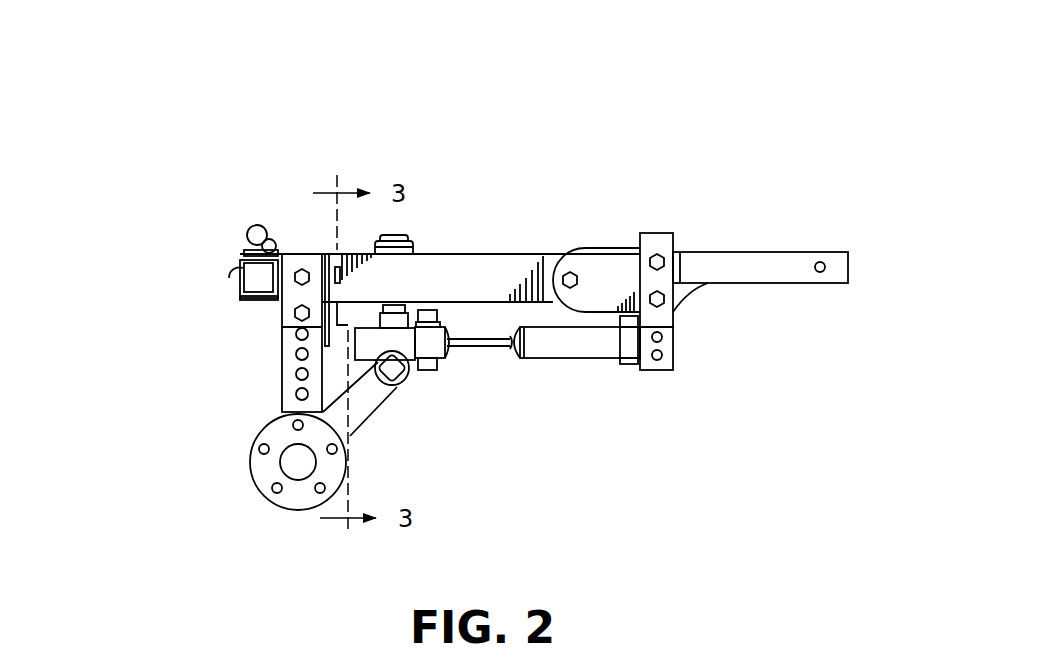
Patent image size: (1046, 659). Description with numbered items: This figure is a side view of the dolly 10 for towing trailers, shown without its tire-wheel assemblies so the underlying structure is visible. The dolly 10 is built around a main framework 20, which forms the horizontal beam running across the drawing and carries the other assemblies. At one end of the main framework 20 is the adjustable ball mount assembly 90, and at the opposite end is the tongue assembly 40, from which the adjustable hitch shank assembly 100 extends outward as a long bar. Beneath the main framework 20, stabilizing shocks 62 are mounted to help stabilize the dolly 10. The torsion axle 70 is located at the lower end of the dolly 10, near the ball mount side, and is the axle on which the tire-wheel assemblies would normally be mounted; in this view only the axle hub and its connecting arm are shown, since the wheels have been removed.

The dolly 10 is at (207, 98).
The main framework 20 is at (431, 214).
The tongue assembly 40 is at (618, 207).
The stabilizing shocks 62 is at (563, 386).
The torsion axle 70 is at (402, 443).
The adjustable ball mount assembly 90 is at (223, 254).
The adjustable hitch shank assembly 100 is at (768, 222).